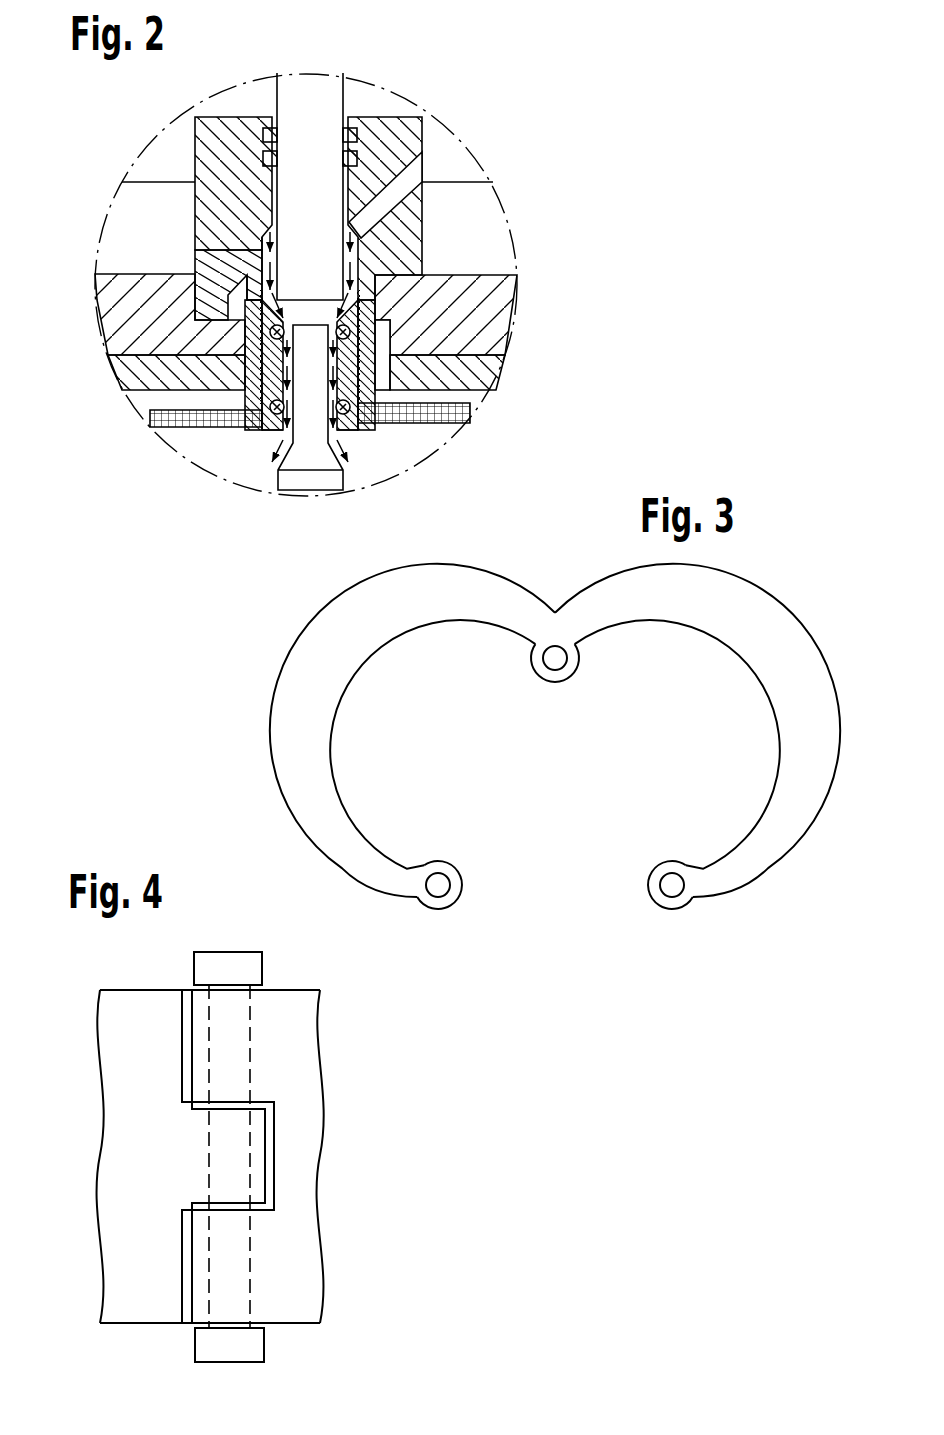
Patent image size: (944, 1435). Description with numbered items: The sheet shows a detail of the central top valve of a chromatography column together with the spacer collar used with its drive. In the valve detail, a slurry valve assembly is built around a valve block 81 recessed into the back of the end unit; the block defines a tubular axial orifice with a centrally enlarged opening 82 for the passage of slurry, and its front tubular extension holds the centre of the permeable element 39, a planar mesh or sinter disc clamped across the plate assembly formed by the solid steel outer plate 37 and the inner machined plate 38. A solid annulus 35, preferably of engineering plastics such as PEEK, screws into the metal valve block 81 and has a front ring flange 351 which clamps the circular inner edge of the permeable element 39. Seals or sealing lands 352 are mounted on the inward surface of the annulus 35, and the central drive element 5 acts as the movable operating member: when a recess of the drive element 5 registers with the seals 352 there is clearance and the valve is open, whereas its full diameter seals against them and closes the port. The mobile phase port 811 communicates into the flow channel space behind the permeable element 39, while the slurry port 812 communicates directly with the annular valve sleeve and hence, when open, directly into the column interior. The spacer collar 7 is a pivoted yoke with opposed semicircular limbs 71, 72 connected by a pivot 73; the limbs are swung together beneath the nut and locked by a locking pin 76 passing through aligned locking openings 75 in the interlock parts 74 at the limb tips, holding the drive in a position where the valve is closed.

In FIG. 2, the sealing land 352 is at (346, 158).
In FIG. 2, the slurry port 812 is at (412, 162).
In FIG. 2, the centrally enlarged opening 82 is at (245, 245).
In FIG. 2, the valve block 81 is at (400, 238).
In FIG. 2, the mobile phase port 811 is at (205, 262).
In FIG. 2, the outer plate 37 is at (488, 320).
In FIG. 2, the annulus 35 is at (255, 374).
In FIG. 2, the inner machined plate 38 is at (465, 376).
In FIG. 2, the permeable element 39 is at (428, 433).
In FIG. 2, the front ring flange 351 is at (258, 432).
In FIG. 2, the drive element 5 is at (316, 488).
In FIG. 3, the spacer collar 7 is at (544, 778).
In FIG. 3, the semicircular limb 71 is at (308, 746).
In FIG. 3, the semicircular limb 72 is at (800, 746).
In FIG. 3, the pivot 73 is at (555, 662).
In FIG. 3, the interlock part 74 is at (441, 905).
In FIG. 4, the interlock part 74 is at (257, 1153).
In FIG. 3, the locking opening 75 is at (440, 885).
In FIG. 4, the locking pin 76 is at (229, 1051).